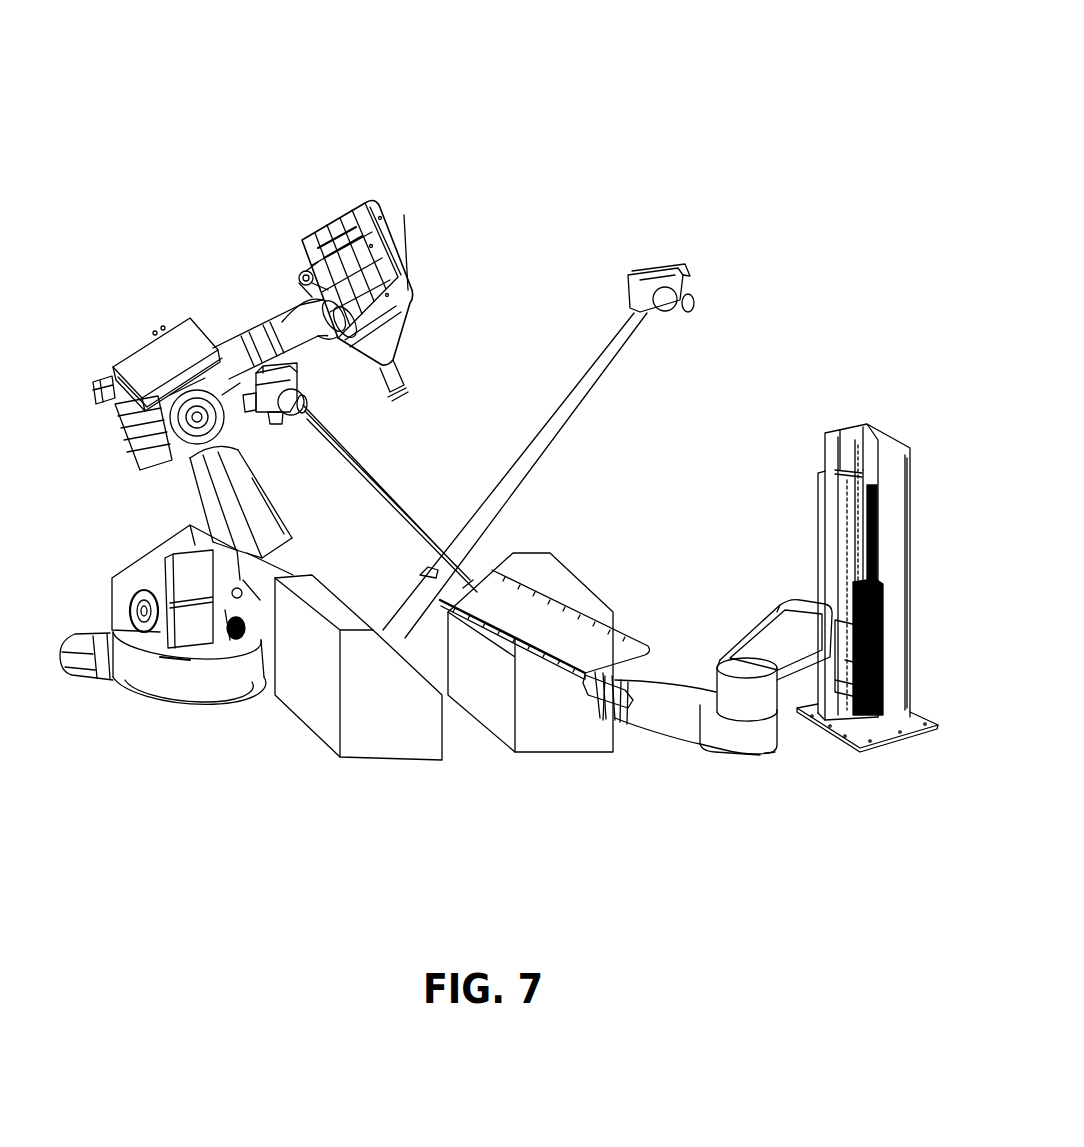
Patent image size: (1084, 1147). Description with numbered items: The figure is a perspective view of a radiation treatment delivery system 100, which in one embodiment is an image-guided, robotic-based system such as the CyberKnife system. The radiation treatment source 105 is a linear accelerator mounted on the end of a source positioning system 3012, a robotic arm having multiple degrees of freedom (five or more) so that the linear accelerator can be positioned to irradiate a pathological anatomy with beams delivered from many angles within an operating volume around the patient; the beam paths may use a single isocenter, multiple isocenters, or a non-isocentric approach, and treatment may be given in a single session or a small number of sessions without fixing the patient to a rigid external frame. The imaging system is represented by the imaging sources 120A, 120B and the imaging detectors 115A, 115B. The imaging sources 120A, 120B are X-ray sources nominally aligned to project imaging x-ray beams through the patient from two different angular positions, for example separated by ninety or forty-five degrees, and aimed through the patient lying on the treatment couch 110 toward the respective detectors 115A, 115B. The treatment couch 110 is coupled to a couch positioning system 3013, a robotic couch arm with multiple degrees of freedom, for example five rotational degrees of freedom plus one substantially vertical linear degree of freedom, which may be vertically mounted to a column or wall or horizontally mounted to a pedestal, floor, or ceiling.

The radiation treatment delivery system 100 is at (777, 72).
The radiation treatment source 105 is at (376, 213).
The source positioning system 3012 is at (242, 337).
The imaging source 120A is at (653, 267).
The imaging source 120B is at (300, 398).
The treatment couch 110 is at (573, 613).
The imaging detector 115A is at (328, 713).
The imaging detector 115B is at (568, 752).
The couch positioning system 3013 is at (745, 757).